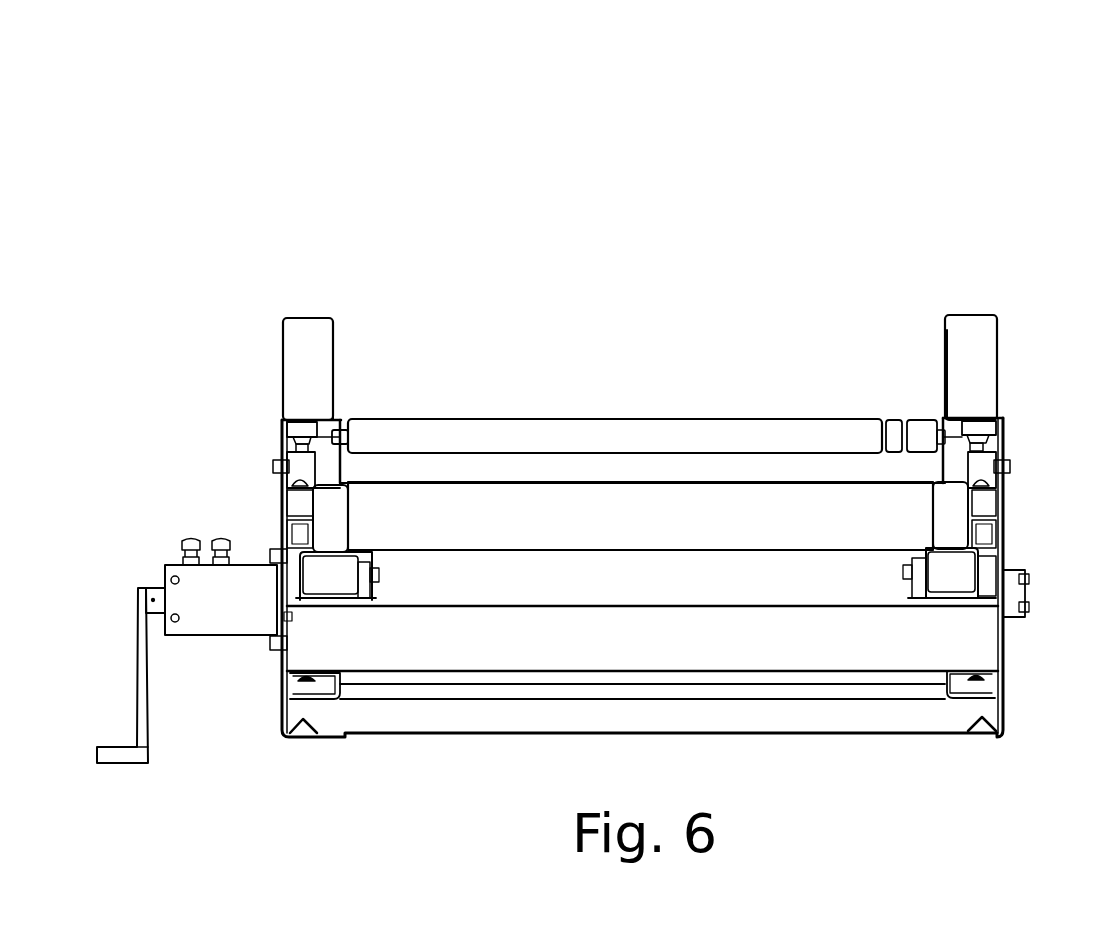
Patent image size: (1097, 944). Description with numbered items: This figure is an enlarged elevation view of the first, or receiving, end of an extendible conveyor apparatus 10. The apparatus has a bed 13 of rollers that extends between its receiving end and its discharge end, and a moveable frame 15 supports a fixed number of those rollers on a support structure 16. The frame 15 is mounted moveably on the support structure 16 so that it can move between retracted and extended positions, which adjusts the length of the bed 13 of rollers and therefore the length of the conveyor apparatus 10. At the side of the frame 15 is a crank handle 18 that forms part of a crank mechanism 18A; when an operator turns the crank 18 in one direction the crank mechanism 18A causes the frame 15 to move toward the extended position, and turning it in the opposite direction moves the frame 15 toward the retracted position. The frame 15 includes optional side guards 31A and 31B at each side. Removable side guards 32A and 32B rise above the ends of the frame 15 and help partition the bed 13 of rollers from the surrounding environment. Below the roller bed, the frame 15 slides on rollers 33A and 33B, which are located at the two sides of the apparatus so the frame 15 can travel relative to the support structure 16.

The conveyor apparatus 10 is at (268, 180).
The bed of rollers 13 is at (642, 422).
The frame 15 is at (453, 480).
The support structure 16 is at (823, 733).
The crank handle 18 is at (110, 754).
The crank mechanism 18A is at (188, 585).
The side guard 31A is at (340, 364).
The side guard 31B is at (943, 361).
The removable side guard 32A is at (284, 348).
The removable side guard 32B is at (1000, 329).
The roller 33A is at (320, 573).
The roller 33B is at (963, 560).